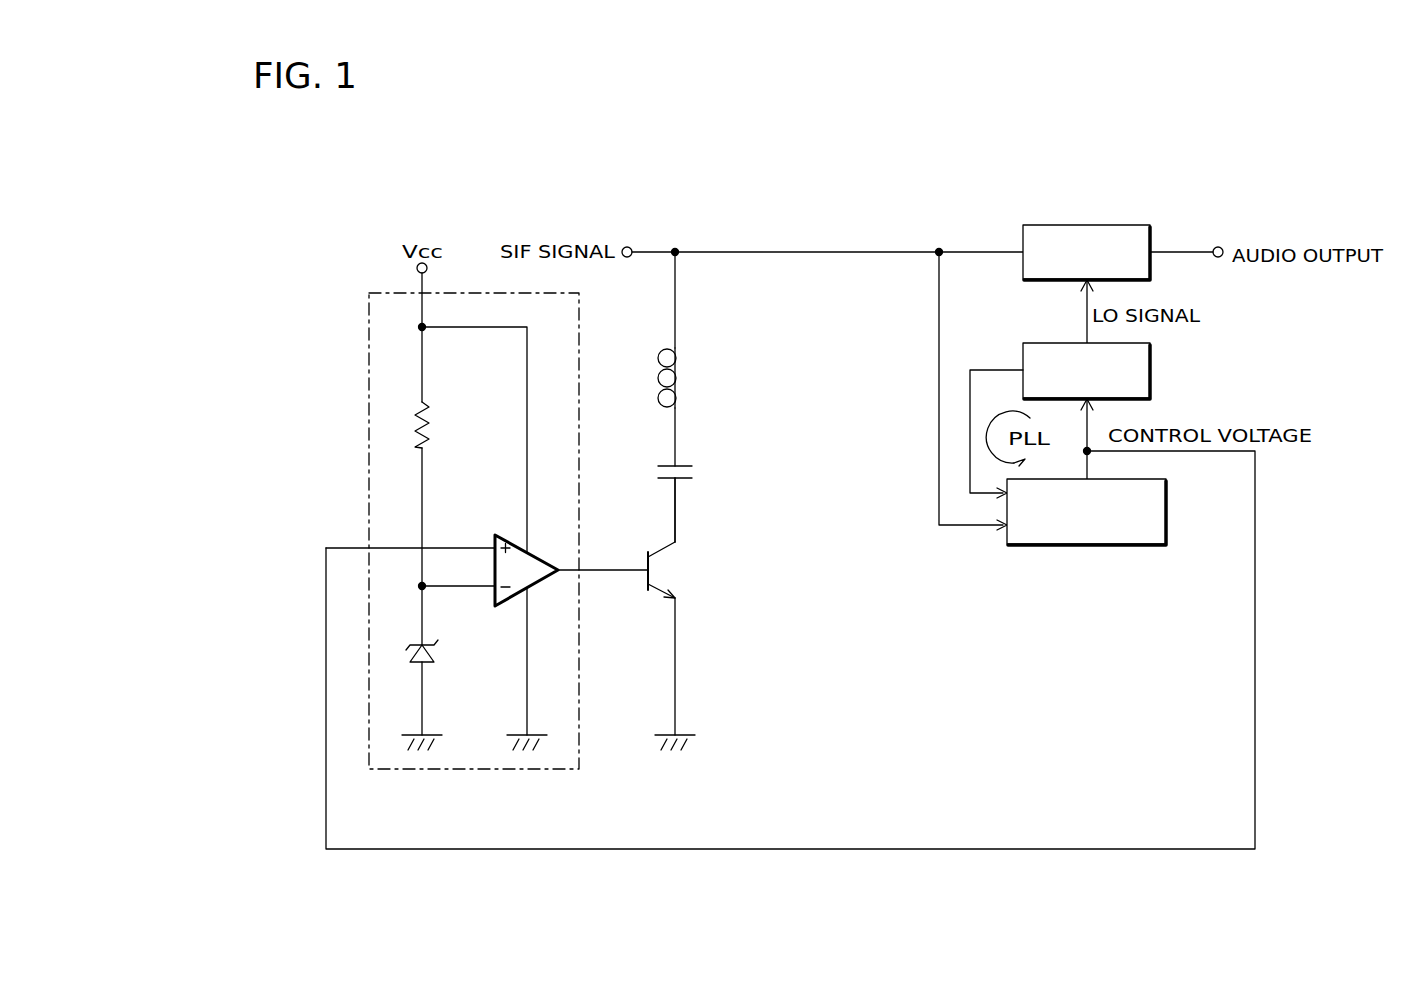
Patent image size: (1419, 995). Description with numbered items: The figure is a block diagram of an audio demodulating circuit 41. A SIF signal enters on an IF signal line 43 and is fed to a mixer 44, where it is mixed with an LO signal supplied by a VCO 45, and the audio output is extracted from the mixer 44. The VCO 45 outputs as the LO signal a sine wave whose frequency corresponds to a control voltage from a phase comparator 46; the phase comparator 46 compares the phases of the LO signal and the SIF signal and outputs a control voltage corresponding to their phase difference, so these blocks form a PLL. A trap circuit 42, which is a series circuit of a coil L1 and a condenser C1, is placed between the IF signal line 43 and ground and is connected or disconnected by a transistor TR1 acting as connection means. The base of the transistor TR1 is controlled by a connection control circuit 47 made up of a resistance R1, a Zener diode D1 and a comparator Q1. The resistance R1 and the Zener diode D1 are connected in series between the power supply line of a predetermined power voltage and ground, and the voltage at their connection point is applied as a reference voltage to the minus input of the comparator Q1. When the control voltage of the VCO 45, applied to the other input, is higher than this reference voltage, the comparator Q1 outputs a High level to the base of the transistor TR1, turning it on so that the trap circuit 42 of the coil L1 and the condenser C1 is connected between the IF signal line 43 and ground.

The audio demodulating circuit 41 is at (494, 174).
The trap circuit 42 is at (793, 445).
The IF signal line 43 is at (728, 252).
The mixer 44 is at (1087, 225).
The VCO 45 is at (1152, 375).
The phase comparator 46 is at (1087, 545).
The connection control circuit 47 is at (497, 769).
The resistance R1 is at (428, 408).
The comparator Q1 is at (503, 534).
The Zener diode D1 is at (440, 654).
The coil L1 is at (683, 368).
The condenser C1 is at (693, 459).
The transistor TR1 is at (665, 550).